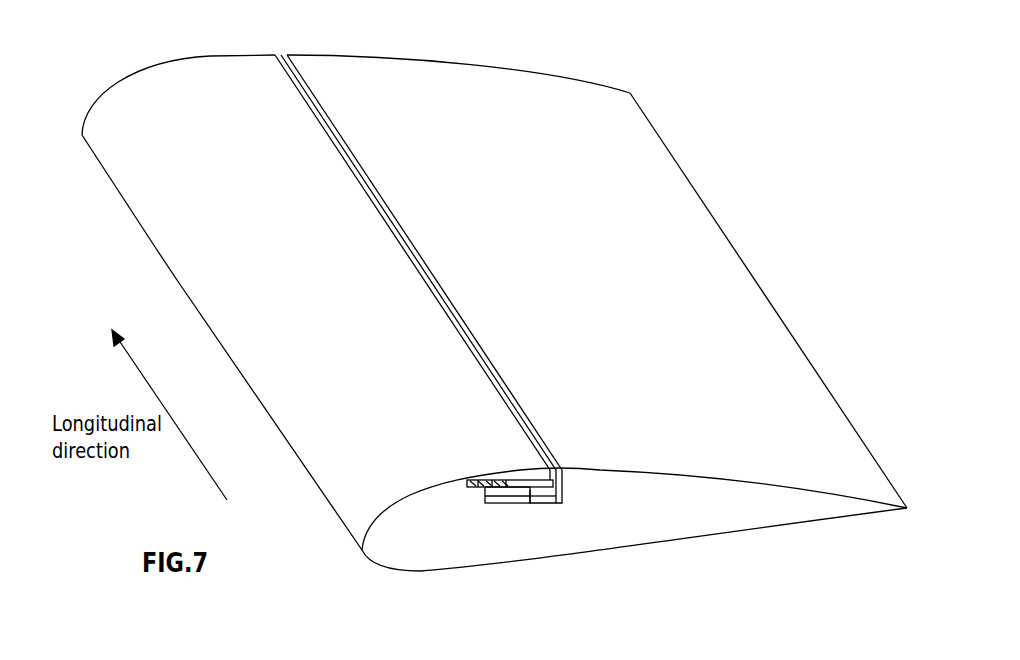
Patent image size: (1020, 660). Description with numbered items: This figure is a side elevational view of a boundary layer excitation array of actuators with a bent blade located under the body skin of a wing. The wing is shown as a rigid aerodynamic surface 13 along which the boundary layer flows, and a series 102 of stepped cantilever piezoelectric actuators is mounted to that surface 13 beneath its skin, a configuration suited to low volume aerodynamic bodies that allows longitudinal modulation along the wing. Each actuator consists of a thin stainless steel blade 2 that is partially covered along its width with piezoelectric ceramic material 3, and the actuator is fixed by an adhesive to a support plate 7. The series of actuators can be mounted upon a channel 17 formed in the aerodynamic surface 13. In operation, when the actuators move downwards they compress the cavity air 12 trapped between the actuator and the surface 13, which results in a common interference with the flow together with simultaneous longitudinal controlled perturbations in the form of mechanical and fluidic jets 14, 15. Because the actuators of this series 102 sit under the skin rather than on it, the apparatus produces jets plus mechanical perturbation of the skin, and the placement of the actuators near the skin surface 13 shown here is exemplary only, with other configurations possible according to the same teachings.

The surface 13 is at (728, 265).
The fluidic jet 15 is at (532, 420).
The mechanical jet 14 is at (563, 467).
The cavity air 12 is at (560, 493).
The thin stainless steel blade 2 is at (530, 480).
The support plate 7 is at (473, 480).
The piezoelectric ceramic material 3 is at (497, 498).
The channel 17 is at (527, 504).
The series of actuators 102 is at (548, 497).